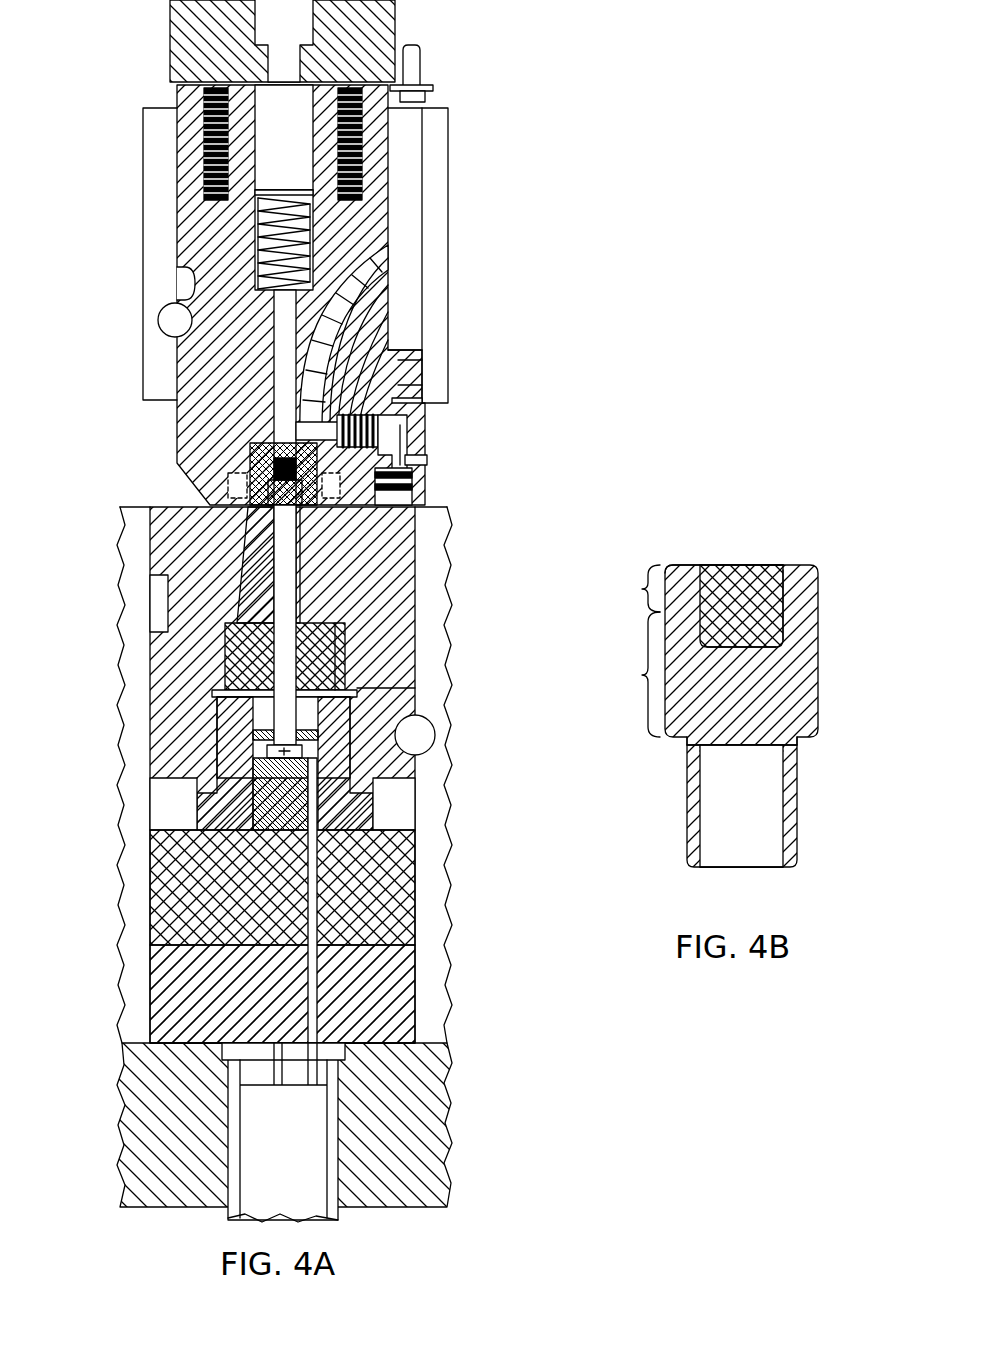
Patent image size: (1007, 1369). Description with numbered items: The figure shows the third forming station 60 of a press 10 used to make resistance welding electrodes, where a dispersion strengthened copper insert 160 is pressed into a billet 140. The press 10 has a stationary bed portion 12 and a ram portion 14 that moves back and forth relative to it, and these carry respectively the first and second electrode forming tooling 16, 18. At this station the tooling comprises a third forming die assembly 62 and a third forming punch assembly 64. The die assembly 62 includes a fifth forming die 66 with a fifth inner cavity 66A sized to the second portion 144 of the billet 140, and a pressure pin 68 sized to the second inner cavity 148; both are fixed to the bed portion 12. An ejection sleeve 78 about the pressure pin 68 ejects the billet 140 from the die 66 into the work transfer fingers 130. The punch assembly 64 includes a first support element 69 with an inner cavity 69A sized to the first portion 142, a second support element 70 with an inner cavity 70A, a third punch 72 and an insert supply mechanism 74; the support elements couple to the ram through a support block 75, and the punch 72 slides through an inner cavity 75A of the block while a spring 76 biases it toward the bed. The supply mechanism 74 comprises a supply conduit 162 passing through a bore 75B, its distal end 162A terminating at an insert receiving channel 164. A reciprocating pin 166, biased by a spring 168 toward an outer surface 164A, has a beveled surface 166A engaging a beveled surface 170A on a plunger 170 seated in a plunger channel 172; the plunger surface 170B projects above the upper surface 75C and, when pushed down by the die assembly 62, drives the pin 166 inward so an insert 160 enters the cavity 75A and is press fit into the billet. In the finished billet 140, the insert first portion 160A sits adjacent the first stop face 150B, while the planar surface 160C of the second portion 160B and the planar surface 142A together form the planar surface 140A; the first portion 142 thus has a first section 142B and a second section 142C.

In FIG. 4A, the press 10 is at (135, 474).
In FIG. 4A, the bed portion 12 is at (150, 1160).
In FIG. 4A, the ram portion 14 is at (150, 129).
In FIG. 4A, the first electrode forming tooling 16 is at (540, 286).
In FIG. 4A, the second electrode forming tooling 18 is at (495, 800).
In FIG. 4A, the third forming station 60 is at (465, 505).
In FIG. 4A, the third forming die assembly 62 is at (392, 618).
In FIG. 4A, the third forming punch assembly 64 is at (520, 404).
In FIG. 4A, the fifth forming die 66 is at (400, 605).
In FIG. 4A, the fifth inner cavity 66A is at (215, 610).
In FIG. 4A, the pressure pin 68 is at (285, 675).
In FIG. 4A, the first support element 69 is at (287, 483).
In FIG. 4A, the inner cavity 69A is at (293, 497).
In FIG. 4A, the second support element 70 is at (270, 463).
In FIG. 4A, the inner cavity 70A is at (265, 443).
In FIG. 4A, the third punch 72 is at (288, 366).
In FIG. 4A, the insert supply mechanism 74 is at (398, 393).
In FIG. 4A, the support block 75 is at (205, 268).
In FIG. 4A, the inner cavity 75A is at (265, 338).
In FIG. 4A, the bore 75B is at (372, 282).
In FIG. 4A, the upper surface 75C is at (363, 507).
In FIG. 4A, the spring 76 is at (265, 242).
In FIG. 4A, the ejection sleeve 78 is at (250, 733).
In FIG. 4A, the work transfer fingers 130 is at (235, 483).
In FIG. 4B, the billet 140 is at (708, 728).
In FIG. 4B, the substantially planar surface 140A is at (708, 520).
In FIG. 4B, the first portion 142 is at (800, 694).
In FIG. 4B, the substantially planar surface 142A is at (687, 562).
In FIG. 4B, the first section 142B is at (616, 588).
In FIG. 4B, the second section 142C is at (617, 674).
In FIG. 4B, the second portion 144 is at (795, 832).
In FIG. 4B, the second inner cavity 148 is at (782, 850).
In FIG. 4B, the first stop face 150B is at (745, 645).
In FIG. 4A, the dispersion strengthened copper insert 160 is at (333, 328).
In FIG. 4B, the dispersion strengthened copper insert 160 is at (770, 598).
In FIG. 4B, the first portion 160A is at (768, 628).
In FIG. 4B, the second portion 160B is at (785, 580).
In FIG. 4B, the substantially planar surface 160C is at (775, 568).
In FIG. 4A, the supply conduit 162 is at (378, 246).
In FIG. 4A, the distal end 162A is at (390, 350).
In FIG. 4A, the insert receiving channel 164 is at (385, 428).
In FIG. 4A, the outer surface 164A is at (402, 455).
In FIG. 4A, the reciprocating pin 166 is at (428, 362).
In FIG. 4A, the beveled surface 166A is at (425, 386).
In FIG. 4A, the spring 168 is at (395, 437).
In FIG. 4A, the plunger 170 is at (414, 490).
In FIG. 4A, the beveled surface 170A is at (335, 623).
In FIG. 4A, the surface 170B is at (395, 507).
In FIG. 4A, the plunger channel 172 is at (430, 462).